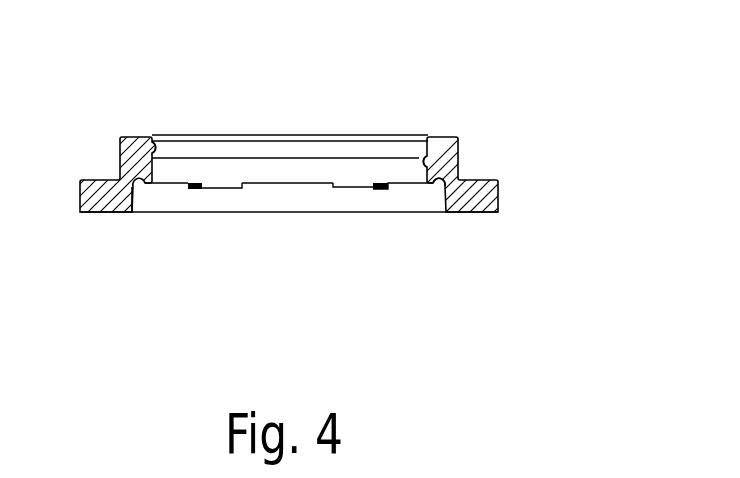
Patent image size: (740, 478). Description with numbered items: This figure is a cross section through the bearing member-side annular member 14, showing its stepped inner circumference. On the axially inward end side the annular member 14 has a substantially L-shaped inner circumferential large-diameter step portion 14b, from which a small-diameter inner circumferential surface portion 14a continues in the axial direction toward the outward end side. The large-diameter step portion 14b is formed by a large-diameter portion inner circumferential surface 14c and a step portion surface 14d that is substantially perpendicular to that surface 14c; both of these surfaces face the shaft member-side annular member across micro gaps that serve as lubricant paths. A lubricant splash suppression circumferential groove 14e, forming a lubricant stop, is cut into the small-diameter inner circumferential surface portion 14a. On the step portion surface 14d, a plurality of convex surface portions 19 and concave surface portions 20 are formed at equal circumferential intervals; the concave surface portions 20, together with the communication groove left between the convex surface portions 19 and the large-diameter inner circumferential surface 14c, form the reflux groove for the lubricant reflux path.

The bearing member-side annular member 14 is at (446, 126).
The small-diameter inner circumferential surface portion 14a is at (421, 164).
The inner circumferential large-diameter step portion 14b is at (133, 213).
The large-diameter portion inner circumferential surface 14c is at (443, 194).
The step portion surface 14d is at (362, 197).
The lubricant splash suppression circumferential groove 14e is at (158, 146).
The convex surface portions 19 is at (222, 188).
The concave surface portions 20 is at (296, 183).